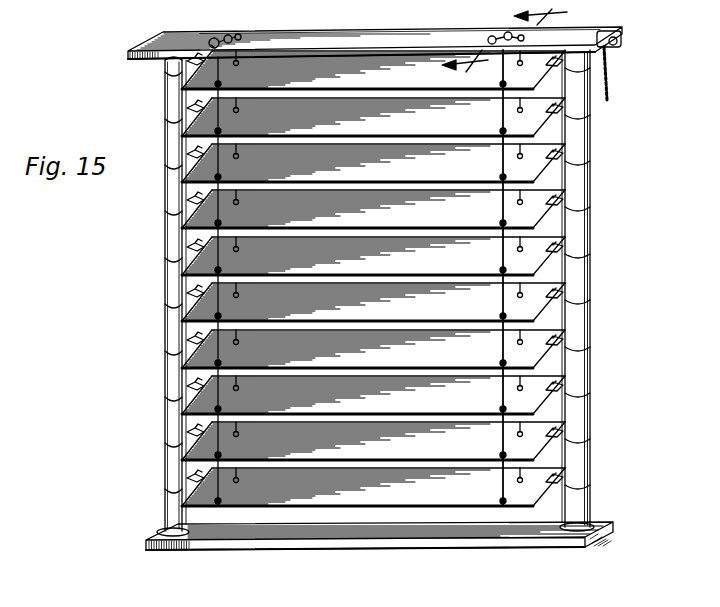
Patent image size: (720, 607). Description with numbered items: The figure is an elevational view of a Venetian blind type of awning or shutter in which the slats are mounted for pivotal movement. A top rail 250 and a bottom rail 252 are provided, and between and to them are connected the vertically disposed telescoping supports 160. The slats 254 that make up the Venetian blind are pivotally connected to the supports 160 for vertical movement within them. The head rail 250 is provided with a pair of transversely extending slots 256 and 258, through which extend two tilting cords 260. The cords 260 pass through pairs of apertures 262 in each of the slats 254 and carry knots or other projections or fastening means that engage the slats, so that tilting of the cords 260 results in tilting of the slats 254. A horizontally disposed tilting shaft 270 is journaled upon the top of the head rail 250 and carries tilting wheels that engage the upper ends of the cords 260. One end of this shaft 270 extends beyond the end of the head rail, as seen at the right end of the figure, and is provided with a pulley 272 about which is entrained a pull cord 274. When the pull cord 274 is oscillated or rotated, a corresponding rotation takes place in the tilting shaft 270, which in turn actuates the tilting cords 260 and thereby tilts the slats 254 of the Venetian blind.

The telescoping supports 160 is at (178, 280).
The top rail 250 is at (192, 46).
The bottom rail 252 is at (333, 528).
The slats 254 is at (323, 115).
The slot 256 is at (236, 36).
The slot 258 is at (503, 34).
The tilting cords 260 is at (220, 352).
The apertures 262 is at (204, 451).
The tilting shaft 270 is at (322, 40).
The pulley 272 is at (608, 33).
The pull cord 274 is at (609, 73).